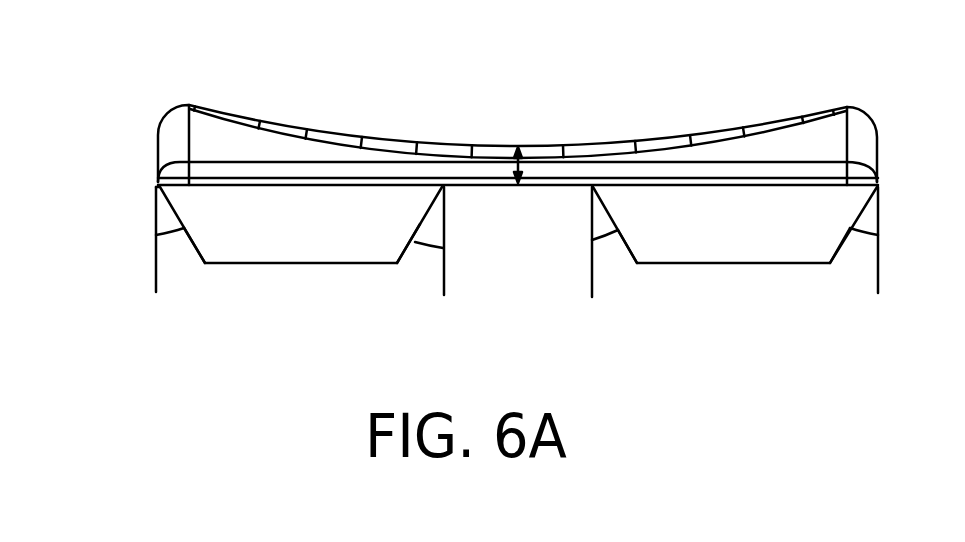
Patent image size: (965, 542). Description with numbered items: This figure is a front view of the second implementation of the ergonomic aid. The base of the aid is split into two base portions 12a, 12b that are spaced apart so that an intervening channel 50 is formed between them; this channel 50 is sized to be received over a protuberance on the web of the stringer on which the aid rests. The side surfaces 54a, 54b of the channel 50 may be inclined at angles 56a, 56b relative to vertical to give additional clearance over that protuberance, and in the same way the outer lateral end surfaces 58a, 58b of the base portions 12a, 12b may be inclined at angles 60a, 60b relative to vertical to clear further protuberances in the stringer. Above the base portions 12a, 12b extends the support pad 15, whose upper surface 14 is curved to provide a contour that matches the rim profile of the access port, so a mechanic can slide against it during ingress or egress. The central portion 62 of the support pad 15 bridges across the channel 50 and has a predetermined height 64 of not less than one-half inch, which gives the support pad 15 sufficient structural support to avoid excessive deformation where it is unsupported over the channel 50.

The upper surface 14 is at (617, 142).
The support pad 15 is at (880, 138).
The channel 50 is at (512, 229).
The central portion 62 is at (490, 116).
The predetermined height 64 is at (523, 166).
The base portion 12a is at (258, 242).
The base portion 12b is at (783, 233).
The side surface 54a is at (407, 260).
The side surface 54b is at (625, 242).
The angle 56a is at (433, 250).
The angle 56b is at (603, 243).
The lateral end surface 58a is at (192, 248).
The lateral end surface 58b is at (836, 253).
The angle 60a is at (170, 234).
The angle 60b is at (862, 240).